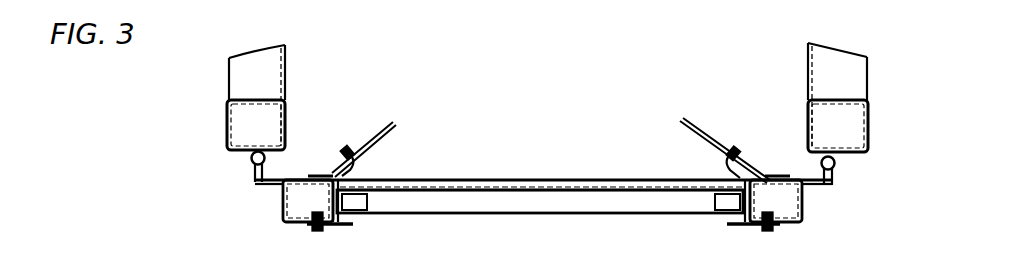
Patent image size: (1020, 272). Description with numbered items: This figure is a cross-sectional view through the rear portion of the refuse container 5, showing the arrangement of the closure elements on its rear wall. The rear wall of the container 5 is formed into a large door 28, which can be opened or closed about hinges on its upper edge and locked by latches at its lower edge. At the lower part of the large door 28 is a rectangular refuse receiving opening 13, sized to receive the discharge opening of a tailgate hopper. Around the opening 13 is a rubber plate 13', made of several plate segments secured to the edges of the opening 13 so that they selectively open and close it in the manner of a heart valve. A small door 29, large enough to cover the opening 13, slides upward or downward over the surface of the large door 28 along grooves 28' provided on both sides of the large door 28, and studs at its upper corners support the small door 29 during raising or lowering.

The container 5 is at (235, 138).
The rectangular refuse receiving opening 13 is at (543, 166).
The rubber plate 13' is at (549, 134).
The large door 28 is at (561, 224).
The grooves 28' is at (543, 226).
The small door 29 is at (510, 213).